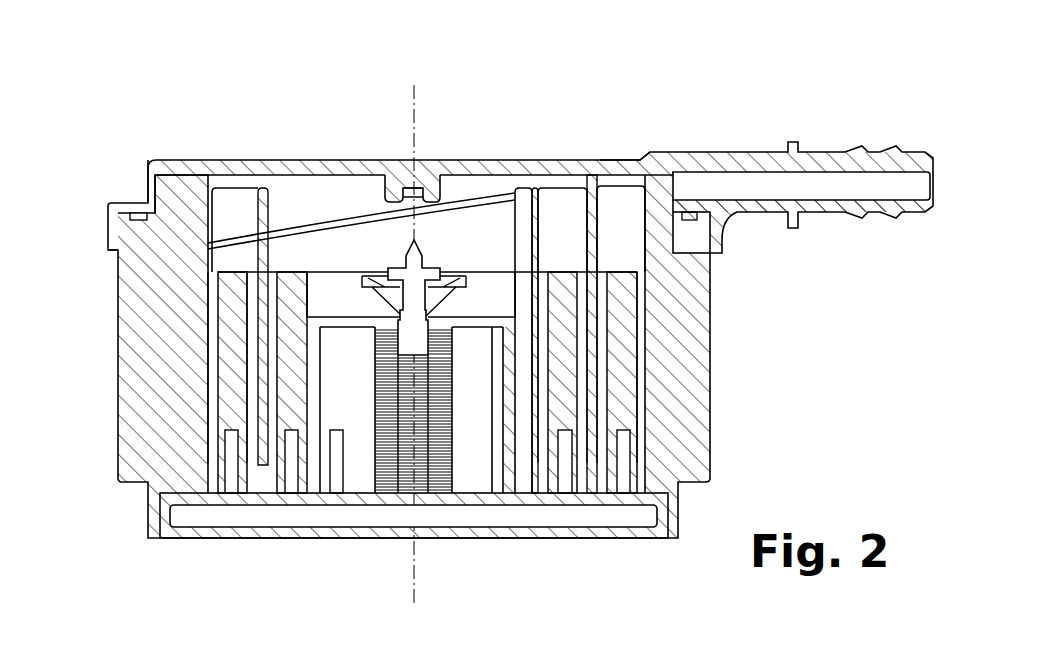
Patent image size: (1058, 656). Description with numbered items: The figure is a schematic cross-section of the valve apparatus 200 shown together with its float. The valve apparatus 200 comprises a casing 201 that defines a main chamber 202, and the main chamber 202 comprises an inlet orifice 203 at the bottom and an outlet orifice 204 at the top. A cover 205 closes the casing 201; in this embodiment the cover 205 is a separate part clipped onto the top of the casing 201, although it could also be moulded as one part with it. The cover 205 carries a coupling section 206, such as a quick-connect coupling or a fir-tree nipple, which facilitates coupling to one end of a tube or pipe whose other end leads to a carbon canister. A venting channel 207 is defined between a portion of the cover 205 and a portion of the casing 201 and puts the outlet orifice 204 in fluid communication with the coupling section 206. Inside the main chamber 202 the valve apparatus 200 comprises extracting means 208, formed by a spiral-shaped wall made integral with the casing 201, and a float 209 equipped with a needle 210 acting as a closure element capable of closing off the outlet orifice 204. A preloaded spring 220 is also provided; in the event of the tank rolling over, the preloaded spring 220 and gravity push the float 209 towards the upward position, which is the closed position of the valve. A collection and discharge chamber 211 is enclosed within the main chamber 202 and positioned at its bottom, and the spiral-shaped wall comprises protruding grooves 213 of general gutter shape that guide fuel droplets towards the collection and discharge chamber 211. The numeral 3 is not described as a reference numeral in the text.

The valve apparatus 200 is at (338, 108).
The casing 201 is at (132, 211).
The main chamber 202 is at (291, 205).
The inlet orifice 203 is at (432, 543).
The outlet orifice 204 is at (416, 171).
The cover 205 is at (196, 160).
The coupling section 206 is at (848, 151).
The venting channel 207 is at (616, 160).
The extracting means 208 is at (254, 252).
The float 209 is at (284, 362).
The needle 210 is at (429, 247).
The collection and discharge chamber 211 is at (201, 520).
The protruding grooves 213 is at (496, 195).
The preloaded spring 220 is at (453, 360).
The housing 3 is at (652, 286).